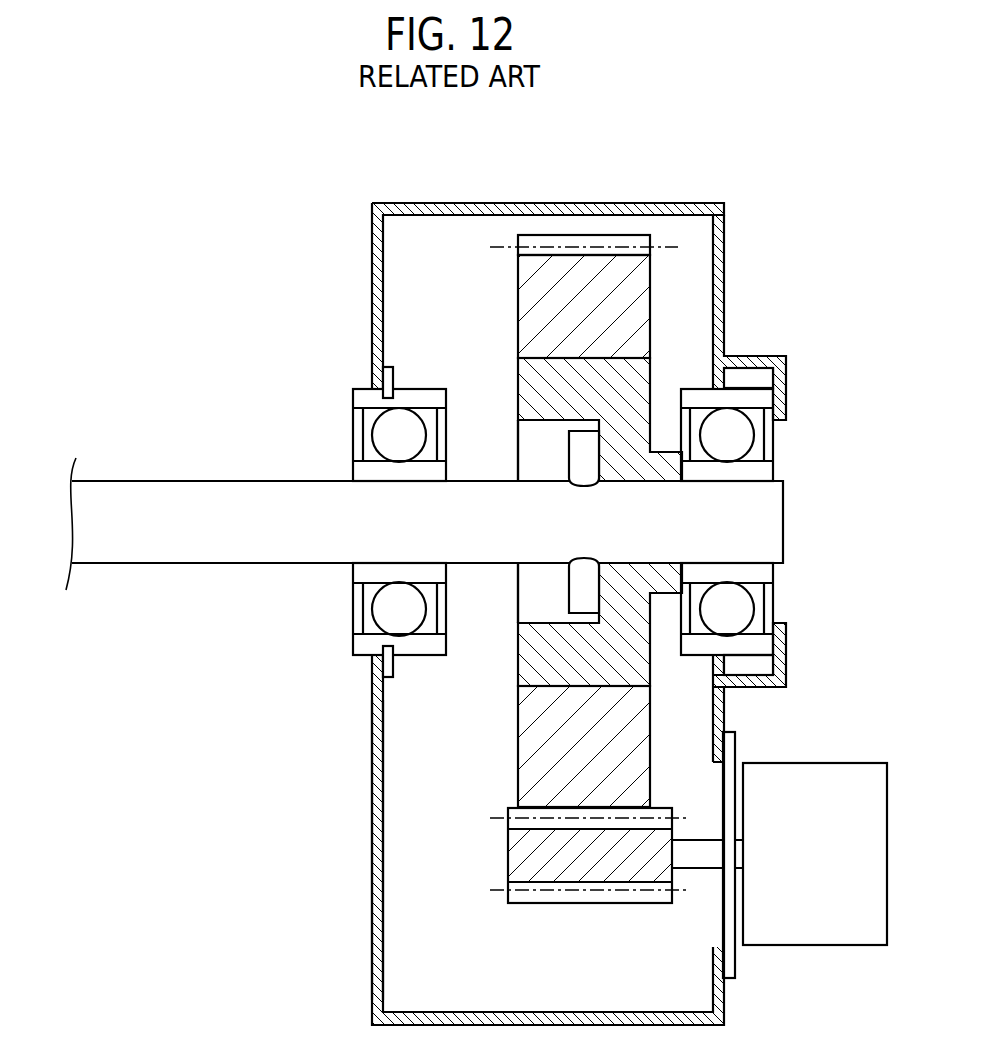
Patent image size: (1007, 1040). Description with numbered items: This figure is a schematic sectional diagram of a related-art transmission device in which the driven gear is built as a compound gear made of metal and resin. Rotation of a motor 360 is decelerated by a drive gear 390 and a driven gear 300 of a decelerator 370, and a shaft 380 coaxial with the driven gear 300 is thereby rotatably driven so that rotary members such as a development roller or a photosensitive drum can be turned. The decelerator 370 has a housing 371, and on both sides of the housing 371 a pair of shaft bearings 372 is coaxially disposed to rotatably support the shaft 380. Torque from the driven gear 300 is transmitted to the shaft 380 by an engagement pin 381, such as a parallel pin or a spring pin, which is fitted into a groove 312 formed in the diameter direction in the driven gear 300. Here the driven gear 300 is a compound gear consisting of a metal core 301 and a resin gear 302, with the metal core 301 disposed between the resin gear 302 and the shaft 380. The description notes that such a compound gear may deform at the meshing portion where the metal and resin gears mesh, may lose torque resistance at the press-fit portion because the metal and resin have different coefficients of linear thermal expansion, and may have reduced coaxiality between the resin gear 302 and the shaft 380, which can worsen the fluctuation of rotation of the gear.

The driven gear 300 is at (552, 521).
The metal core 301 is at (525, 663).
The resin gear 302 is at (525, 718).
The groove 312 is at (533, 452).
The motor 360 is at (815, 946).
The decelerator 370 is at (519, 614).
The housing 371 is at (372, 823).
The shaft bearings 372 is at (360, 646).
The shaft 380 is at (252, 495).
The engagement pin 381 is at (582, 590).
The drive gear 390 is at (515, 857).